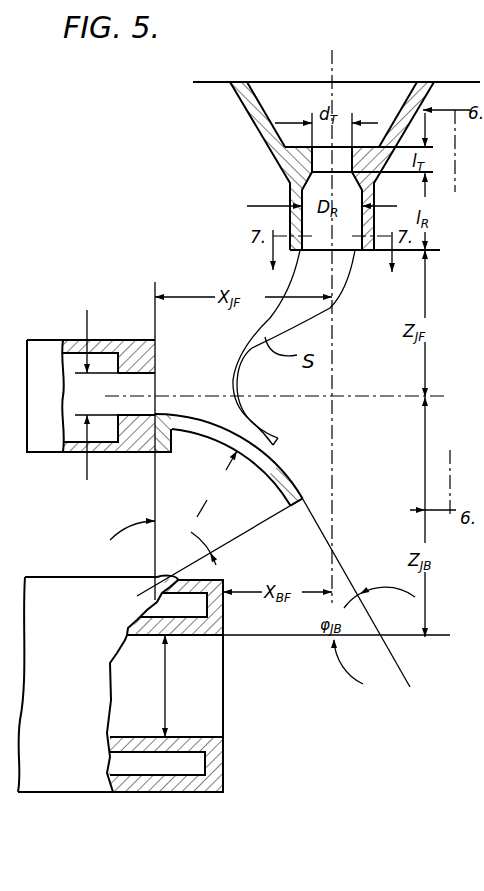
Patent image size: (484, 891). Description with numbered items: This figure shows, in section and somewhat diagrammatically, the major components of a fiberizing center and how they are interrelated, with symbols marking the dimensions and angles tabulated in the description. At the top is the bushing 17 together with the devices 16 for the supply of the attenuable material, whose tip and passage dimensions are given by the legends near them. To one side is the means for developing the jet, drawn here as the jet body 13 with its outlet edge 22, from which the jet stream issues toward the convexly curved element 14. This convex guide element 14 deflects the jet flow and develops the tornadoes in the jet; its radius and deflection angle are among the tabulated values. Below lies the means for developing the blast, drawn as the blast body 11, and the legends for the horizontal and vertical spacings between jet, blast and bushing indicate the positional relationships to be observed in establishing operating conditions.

The base body with bore 11 is at (62, 785).
The jet nozzle body 13 is at (42, 343).
The convexly curved element 14 is at (200, 434).
The devices for the supply of the attenuable material 16 is at (300, 213).
The bushing 17 is at (238, 88).
The jet orifice edge 22 is at (140, 376).